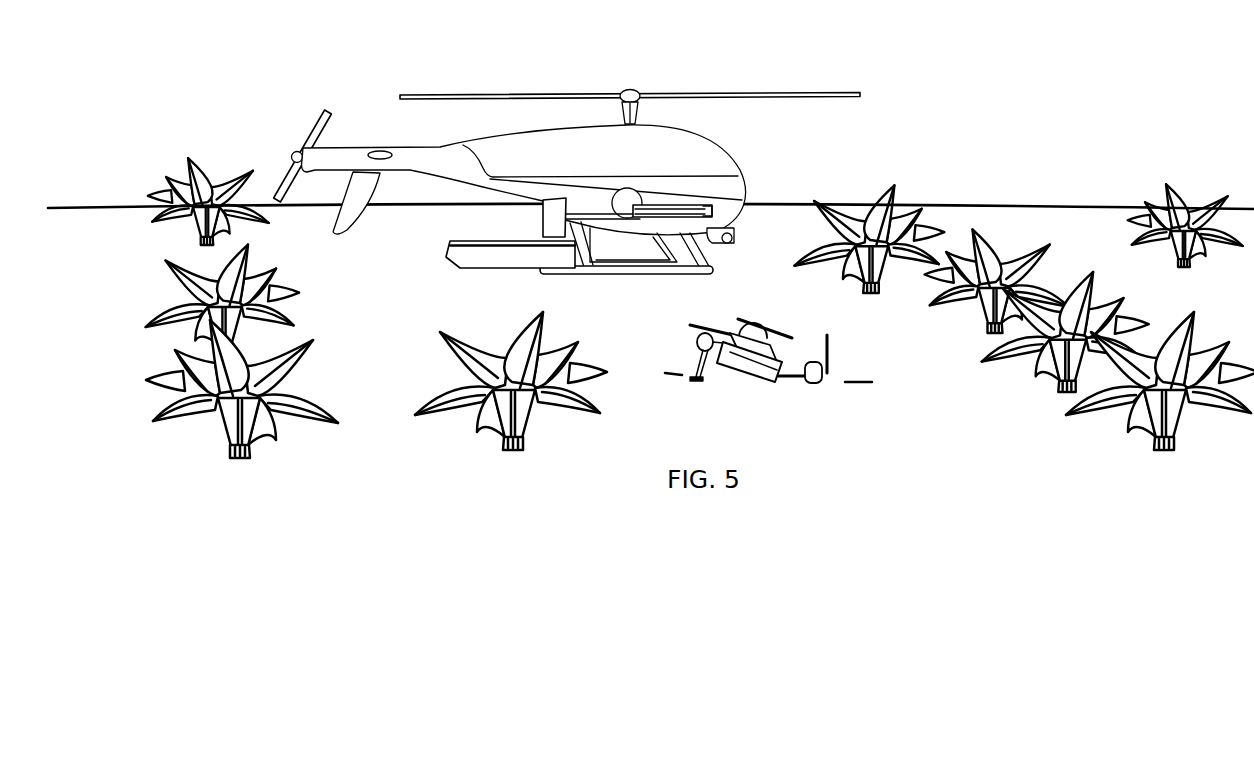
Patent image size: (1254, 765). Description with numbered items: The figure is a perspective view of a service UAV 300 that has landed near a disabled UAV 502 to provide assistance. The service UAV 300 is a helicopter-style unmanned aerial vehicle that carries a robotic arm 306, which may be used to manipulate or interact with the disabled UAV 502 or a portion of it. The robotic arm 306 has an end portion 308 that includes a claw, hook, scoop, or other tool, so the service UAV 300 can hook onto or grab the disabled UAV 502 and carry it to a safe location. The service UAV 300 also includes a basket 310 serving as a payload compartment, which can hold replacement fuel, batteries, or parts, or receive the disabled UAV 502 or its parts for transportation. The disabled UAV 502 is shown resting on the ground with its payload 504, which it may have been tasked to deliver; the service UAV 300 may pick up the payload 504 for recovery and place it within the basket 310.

The service UAV 300 is at (458, 73).
The robotic arm 306 is at (681, 208).
The end portion 308 is at (543, 232).
The basket 310 is at (448, 255).
The disabled UAV 502 is at (802, 402).
The payload 504 is at (752, 372).